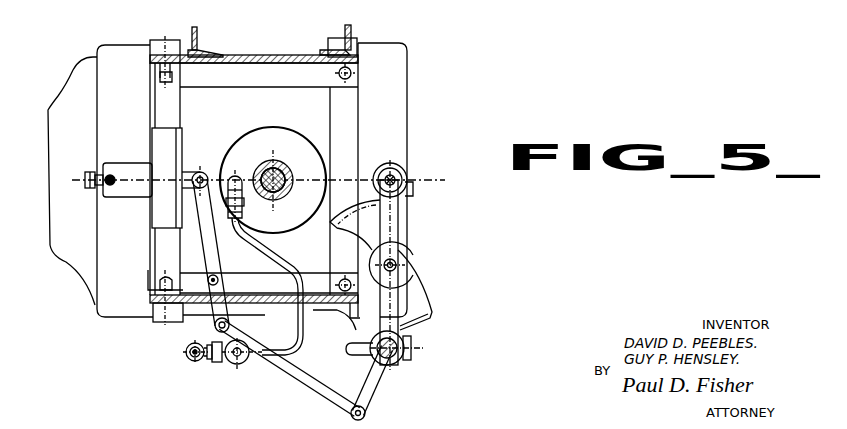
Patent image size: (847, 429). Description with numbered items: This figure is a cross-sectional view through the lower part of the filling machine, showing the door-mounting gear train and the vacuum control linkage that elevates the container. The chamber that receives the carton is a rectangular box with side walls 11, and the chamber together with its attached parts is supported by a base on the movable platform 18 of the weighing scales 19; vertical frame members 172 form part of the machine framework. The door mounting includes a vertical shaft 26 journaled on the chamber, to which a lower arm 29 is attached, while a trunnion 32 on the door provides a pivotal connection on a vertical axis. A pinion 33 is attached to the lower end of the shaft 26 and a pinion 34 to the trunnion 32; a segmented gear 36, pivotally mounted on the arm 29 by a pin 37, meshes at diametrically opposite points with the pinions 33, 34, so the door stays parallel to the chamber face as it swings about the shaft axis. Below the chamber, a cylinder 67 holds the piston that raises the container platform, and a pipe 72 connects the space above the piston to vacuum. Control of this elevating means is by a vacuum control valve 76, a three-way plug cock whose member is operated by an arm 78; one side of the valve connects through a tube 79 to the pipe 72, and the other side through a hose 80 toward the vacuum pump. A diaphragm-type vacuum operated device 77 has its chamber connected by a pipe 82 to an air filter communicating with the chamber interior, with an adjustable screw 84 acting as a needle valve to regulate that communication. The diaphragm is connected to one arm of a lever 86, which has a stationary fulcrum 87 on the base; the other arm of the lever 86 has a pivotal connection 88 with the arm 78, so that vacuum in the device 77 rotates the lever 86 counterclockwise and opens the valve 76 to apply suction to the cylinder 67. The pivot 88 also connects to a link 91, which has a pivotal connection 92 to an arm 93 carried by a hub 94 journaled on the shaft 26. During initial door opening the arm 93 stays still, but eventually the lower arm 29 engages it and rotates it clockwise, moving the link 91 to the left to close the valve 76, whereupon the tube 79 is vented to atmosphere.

The side walls 11 is at (243, 55).
The movable platform 18 is at (400, 63).
The weighing scales 19 is at (71, 101).
The vertical shaft 26 is at (355, 345).
The lower arm 29 is at (398, 222).
The trunnion 32 is at (397, 177).
The pinion 33 is at (412, 350).
The pinion 34 is at (410, 188).
The segmented gear 36 is at (424, 303).
The pin 37 is at (395, 262).
The cylinder 67 is at (296, 134).
The pipe 72 is at (229, 178).
The vacuum control valve 76 is at (240, 366).
The vacuum operated device 77 is at (162, 213).
The arm 78 is at (218, 364).
The tube 79 is at (282, 262).
The hose 80 is at (186, 354).
The pipe 82 is at (113, 176).
The adjustable screw 84 is at (88, 176).
The lever 86 is at (216, 258).
The stationary fulcrum 87 is at (220, 280).
The pivotal connection 88 is at (214, 326).
The link 91 is at (298, 380).
The pivotal connection 92 is at (351, 413).
The arm 93 is at (368, 393).
The hub 94 is at (430, 330).
The vertical frame members 172 is at (195, 30).